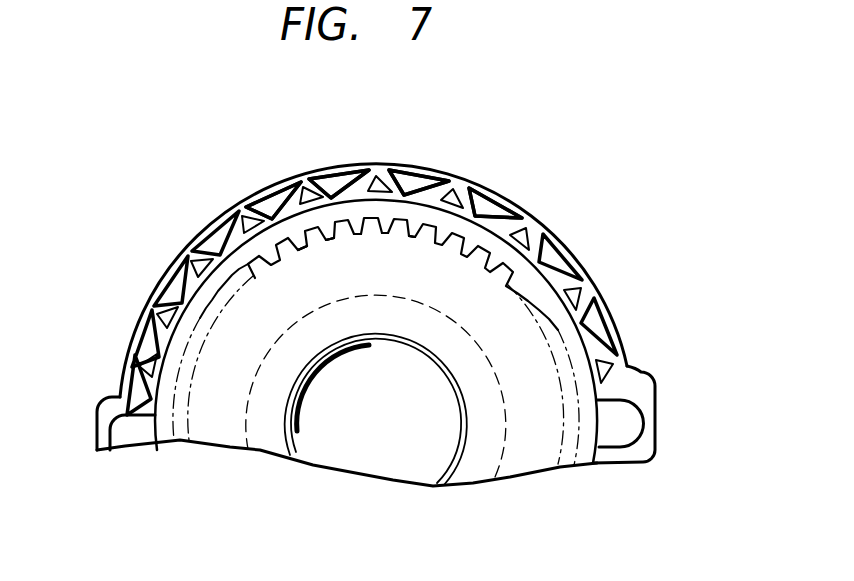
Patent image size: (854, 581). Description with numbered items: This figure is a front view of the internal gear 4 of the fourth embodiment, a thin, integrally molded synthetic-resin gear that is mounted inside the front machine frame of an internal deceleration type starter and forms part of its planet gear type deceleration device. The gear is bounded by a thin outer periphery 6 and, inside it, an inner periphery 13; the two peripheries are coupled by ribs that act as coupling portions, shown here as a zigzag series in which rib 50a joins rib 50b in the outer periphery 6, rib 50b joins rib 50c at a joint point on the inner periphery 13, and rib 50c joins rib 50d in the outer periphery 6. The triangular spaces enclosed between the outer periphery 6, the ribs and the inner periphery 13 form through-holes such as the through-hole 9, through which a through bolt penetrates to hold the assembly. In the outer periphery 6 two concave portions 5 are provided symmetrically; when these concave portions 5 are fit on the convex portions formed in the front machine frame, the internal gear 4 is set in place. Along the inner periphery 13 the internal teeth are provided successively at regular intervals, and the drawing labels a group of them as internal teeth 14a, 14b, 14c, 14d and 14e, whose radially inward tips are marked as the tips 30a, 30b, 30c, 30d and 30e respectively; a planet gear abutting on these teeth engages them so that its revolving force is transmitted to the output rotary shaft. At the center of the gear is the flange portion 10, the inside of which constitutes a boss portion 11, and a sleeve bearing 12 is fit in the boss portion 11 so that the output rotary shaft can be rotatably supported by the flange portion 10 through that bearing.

The internal gear 4 is at (191, 248).
The concave portion 5 is at (115, 398).
The outer periphery 6 is at (243, 214).
The through-hole 9 is at (122, 436).
The flange portion 10 is at (218, 420).
The boss portion 11 is at (468, 468).
The sleeve bearing 12 is at (288, 447).
The inner periphery 13 is at (538, 283).
The internal tooth 14a is at (297, 238).
The internal tooth 14b is at (322, 230).
The internal tooth 14c is at (355, 232).
The internal tooth 14d is at (386, 231).
The internal tooth 14e is at (414, 236).
The tip of internal tooth 30a is at (300, 252).
The tip of internal tooth 30b is at (329, 243).
The tip of internal tooth 30c is at (357, 237).
The tip of internal tooth 30d is at (386, 236).
The tip of internal tooth 30e is at (413, 240).
The rib 50a is at (298, 203).
The rib 50b is at (330, 197).
The rib 50c is at (381, 192).
The rib 50d is at (428, 196).